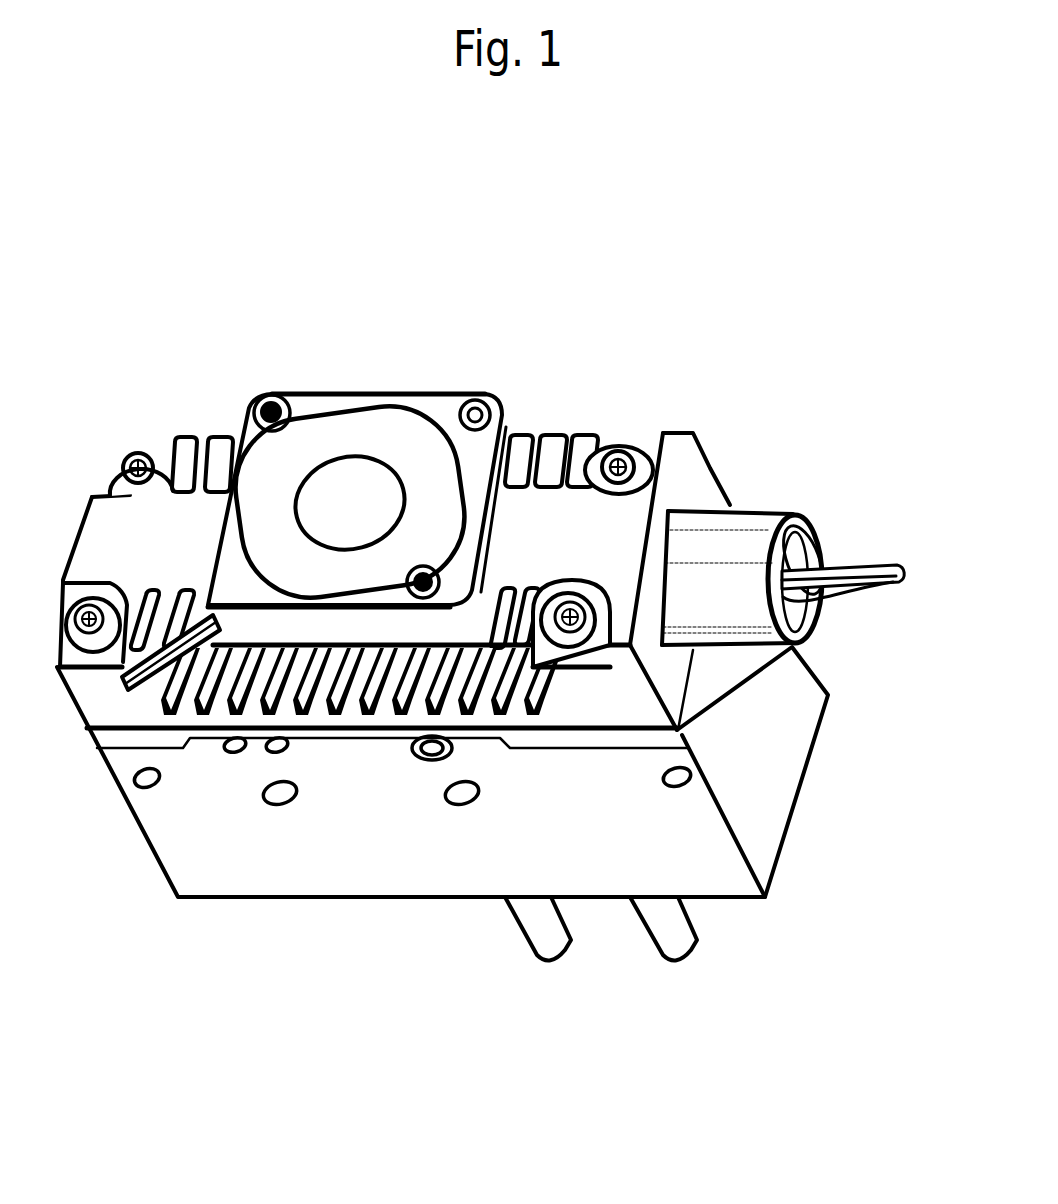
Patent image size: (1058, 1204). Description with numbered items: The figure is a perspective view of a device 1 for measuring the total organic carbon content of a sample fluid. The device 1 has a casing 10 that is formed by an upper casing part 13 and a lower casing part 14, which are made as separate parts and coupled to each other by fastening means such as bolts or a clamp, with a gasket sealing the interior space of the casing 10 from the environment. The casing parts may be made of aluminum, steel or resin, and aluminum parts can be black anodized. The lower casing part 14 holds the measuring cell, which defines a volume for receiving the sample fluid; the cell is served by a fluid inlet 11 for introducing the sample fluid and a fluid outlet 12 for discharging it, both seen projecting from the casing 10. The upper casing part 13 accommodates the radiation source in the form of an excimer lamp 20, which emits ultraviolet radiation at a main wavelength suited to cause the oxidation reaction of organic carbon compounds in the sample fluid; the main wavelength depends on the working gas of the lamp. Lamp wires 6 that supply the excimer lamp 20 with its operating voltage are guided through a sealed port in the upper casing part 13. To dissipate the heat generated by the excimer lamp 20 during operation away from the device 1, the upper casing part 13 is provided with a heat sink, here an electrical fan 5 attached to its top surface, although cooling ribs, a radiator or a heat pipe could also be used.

The device 1 is at (502, 693).
The electrical fan 5 is at (500, 420).
The lamp wires 6 is at (860, 590).
The casing 10 is at (466, 915).
The fluid inlet 11 is at (697, 945).
The fluid outlet 12 is at (540, 962).
The upper casing part 13 is at (167, 540).
The lower casing part 14 is at (323, 840).
The excimer lamp 20 is at (760, 537).